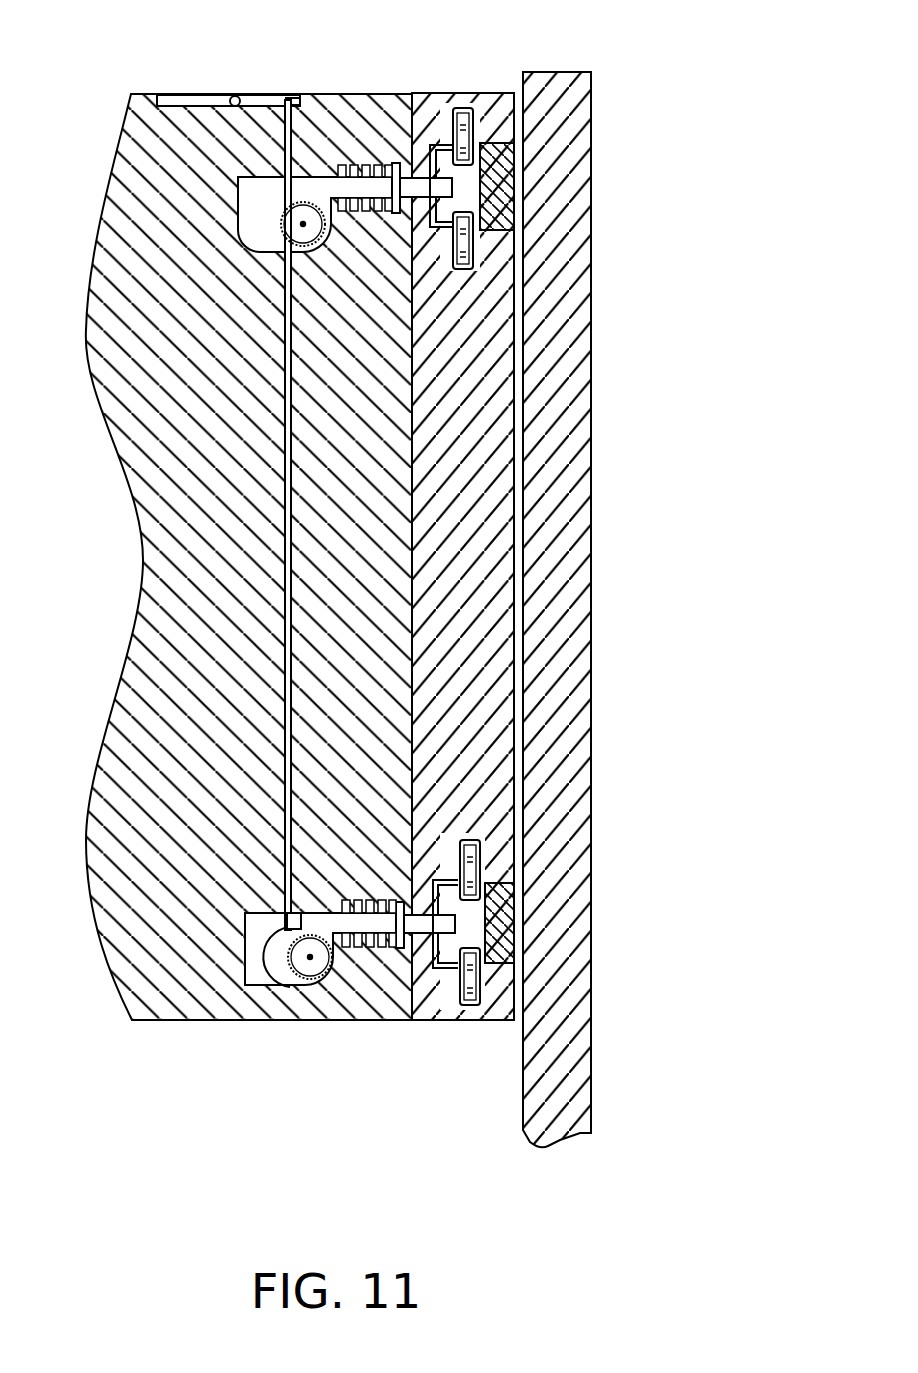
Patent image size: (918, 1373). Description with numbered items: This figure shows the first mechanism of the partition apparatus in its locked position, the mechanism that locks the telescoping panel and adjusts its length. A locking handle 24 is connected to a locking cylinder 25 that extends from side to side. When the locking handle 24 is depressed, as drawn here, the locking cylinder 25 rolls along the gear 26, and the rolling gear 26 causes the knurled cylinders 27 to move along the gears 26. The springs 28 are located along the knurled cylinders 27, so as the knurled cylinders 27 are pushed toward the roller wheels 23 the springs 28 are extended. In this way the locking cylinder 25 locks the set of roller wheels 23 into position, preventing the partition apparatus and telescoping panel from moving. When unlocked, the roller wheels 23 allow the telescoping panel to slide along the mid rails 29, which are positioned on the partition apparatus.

The roller wheels 23 is at (463, 238).
The locking handle 24 is at (282, 143).
The locking cylinder 25 is at (284, 515).
The gear 26 is at (310, 217).
The knurled cylinder 27 is at (268, 987).
The spring 28 is at (393, 162).
The mid rail 29 is at (483, 185).